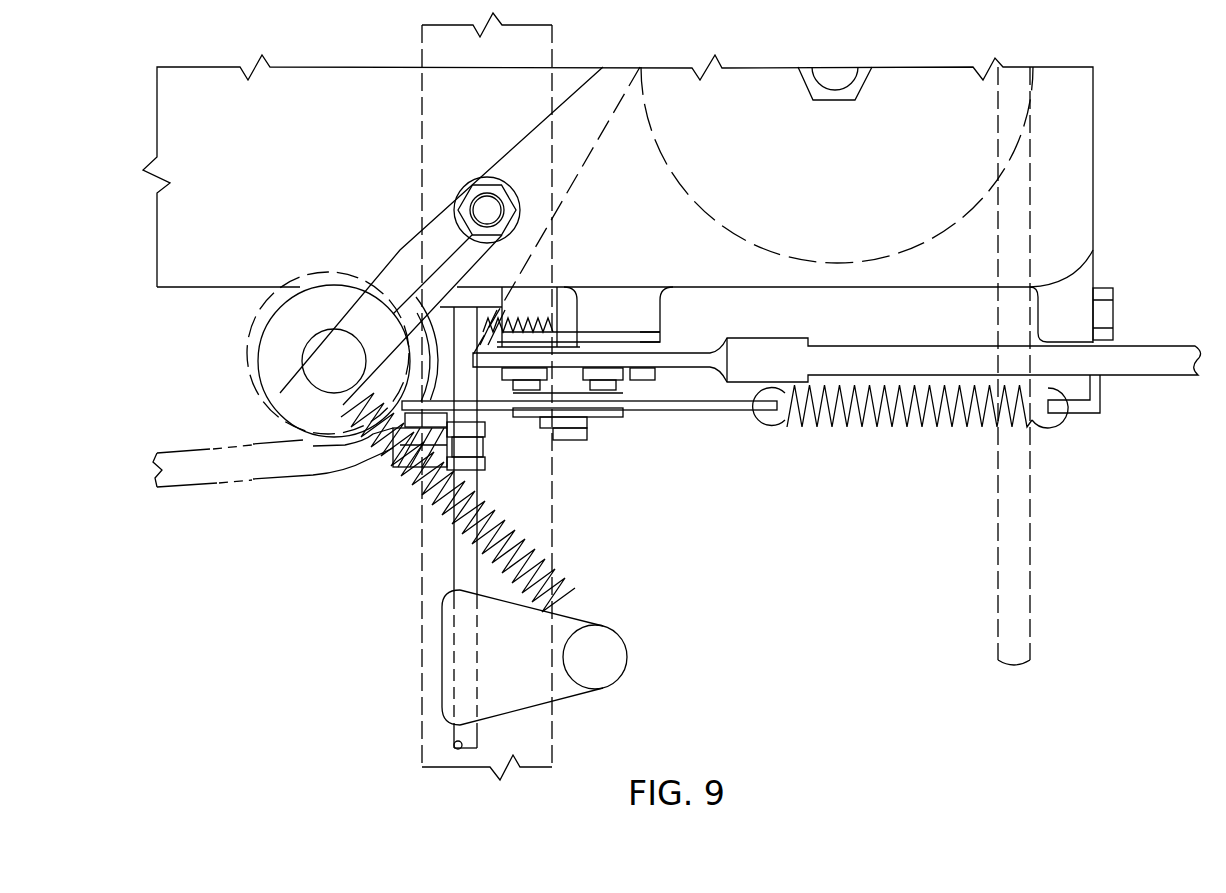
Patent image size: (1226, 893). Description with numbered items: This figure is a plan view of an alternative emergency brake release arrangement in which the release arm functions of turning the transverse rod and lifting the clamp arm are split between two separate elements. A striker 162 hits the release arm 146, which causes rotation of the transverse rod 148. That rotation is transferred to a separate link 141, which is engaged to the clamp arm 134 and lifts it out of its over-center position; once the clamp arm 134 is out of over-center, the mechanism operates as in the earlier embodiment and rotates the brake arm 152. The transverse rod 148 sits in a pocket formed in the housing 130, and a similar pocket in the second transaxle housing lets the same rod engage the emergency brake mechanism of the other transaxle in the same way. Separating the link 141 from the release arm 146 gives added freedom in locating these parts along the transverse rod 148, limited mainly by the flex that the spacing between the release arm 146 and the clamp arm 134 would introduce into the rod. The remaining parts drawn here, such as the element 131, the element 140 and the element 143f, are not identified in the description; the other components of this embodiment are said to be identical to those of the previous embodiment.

The housing 130 is at (277, 189).
The bracket 131 is at (480, 298).
The clamp arm 134 is at (693, 412).
The lever assembly 140 is at (238, 623).
The link 141 is at (485, 433).
The lever 143f is at (422, 322).
The release arm 146 is at (485, 460).
The transverse rod 148 is at (478, 480).
The brake arm 152 is at (567, 382).
The striker 162 is at (327, 419).